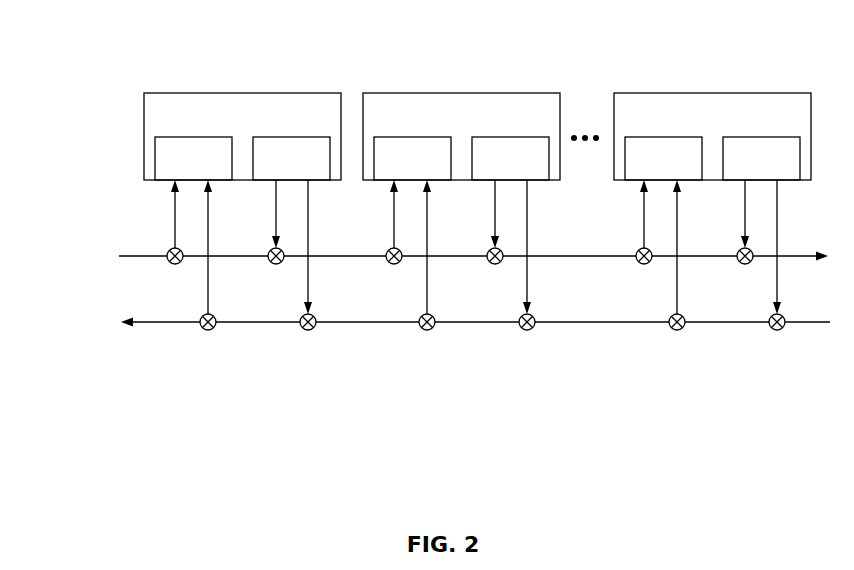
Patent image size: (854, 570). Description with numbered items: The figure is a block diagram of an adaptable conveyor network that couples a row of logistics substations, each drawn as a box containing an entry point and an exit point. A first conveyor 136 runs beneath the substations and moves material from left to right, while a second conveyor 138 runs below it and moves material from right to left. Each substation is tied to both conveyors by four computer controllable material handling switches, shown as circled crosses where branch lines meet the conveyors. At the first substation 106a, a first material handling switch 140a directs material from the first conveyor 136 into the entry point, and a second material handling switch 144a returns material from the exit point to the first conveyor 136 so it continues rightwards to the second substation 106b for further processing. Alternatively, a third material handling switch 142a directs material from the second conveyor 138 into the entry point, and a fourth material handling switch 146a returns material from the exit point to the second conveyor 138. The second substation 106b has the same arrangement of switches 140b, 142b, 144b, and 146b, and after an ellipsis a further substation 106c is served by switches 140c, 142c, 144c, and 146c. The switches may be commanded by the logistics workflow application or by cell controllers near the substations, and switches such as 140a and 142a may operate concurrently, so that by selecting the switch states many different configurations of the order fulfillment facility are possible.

The first substation 106a is at (216, 93).
The second substation 106b is at (435, 93).
The substation 106c is at (685, 93).
The first conveyor 136 is at (107, 255).
The second conveyor 138 is at (107, 322).
The first material handling switch 140a is at (175, 264).
The first material handling switch 140b is at (394, 264).
The first material handling switch 140c is at (644, 264).
The third material handling switch 142a is at (208, 330).
The third material handling switch 142b is at (427, 330).
The third material handling switch 142c is at (677, 330).
The second material handling switch 144a is at (276, 264).
The second material handling switch 144b is at (495, 264).
The second material handling switch 144c is at (745, 264).
The fourth material handling switch 146a is at (308, 330).
The fourth material handling switch 146b is at (527, 330).
The fourth material handling switch 146c is at (777, 330).